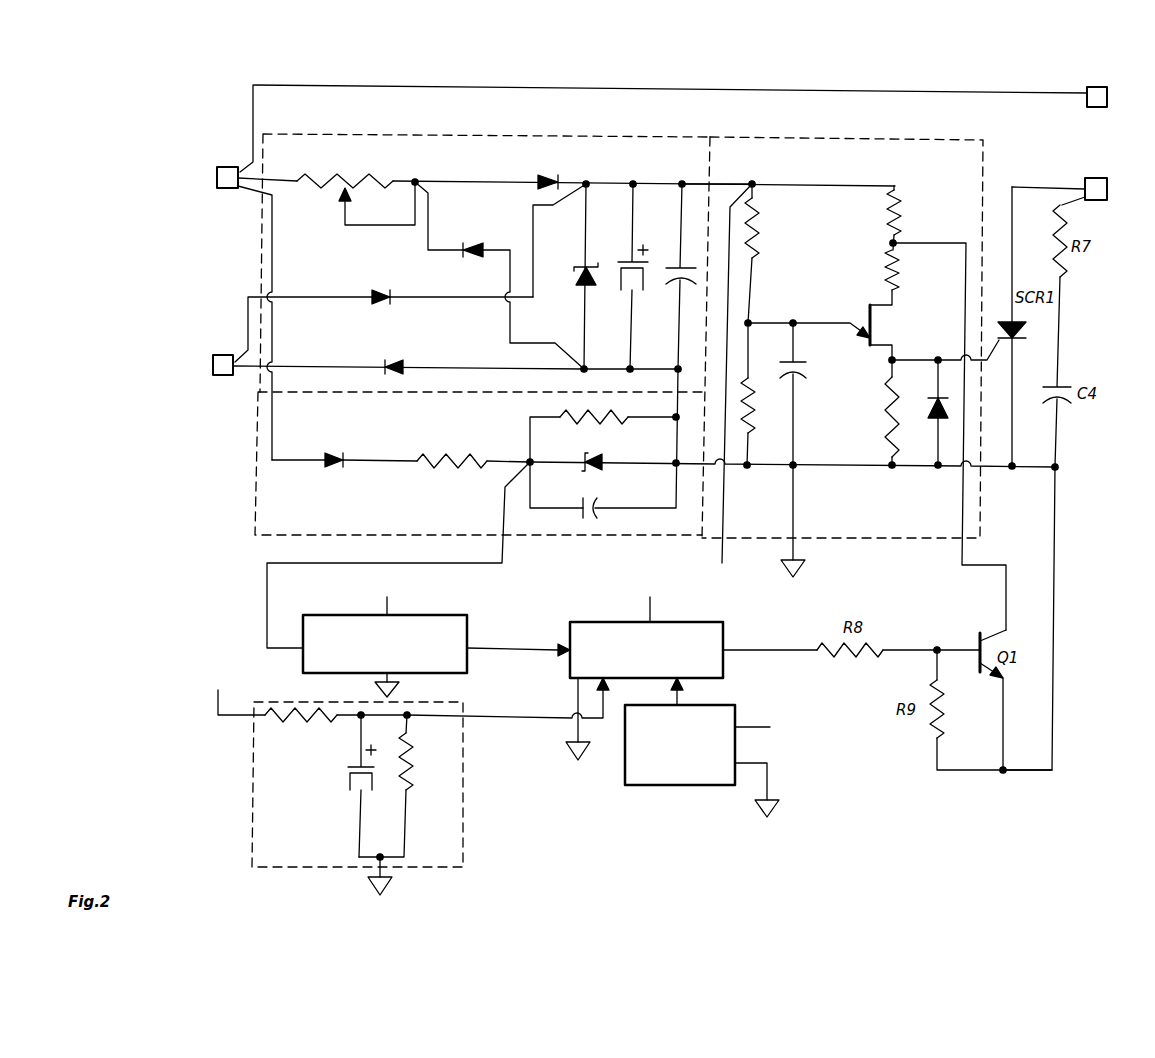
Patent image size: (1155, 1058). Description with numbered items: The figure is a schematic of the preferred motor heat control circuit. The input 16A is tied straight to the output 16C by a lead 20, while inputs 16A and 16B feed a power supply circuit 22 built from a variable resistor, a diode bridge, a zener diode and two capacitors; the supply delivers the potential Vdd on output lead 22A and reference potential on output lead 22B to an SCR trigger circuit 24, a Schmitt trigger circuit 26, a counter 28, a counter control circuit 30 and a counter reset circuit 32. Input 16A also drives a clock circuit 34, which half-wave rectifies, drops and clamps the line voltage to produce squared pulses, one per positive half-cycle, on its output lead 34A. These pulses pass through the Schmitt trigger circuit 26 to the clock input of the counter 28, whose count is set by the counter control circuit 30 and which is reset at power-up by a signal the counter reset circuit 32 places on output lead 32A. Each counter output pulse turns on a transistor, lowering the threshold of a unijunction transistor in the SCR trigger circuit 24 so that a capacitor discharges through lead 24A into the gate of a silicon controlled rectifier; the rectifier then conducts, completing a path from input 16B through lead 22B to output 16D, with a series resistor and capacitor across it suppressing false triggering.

The lead 20 is at (646, 88).
The power supply circuit 22 is at (452, 134).
The output lead 22A is at (688, 182).
The output lead 22B is at (668, 368).
The SCR trigger circuit 24 is at (805, 139).
The lead 24A is at (940, 358).
The Schmitt trigger circuit 26 is at (462, 617).
The counter 28 is at (594, 621).
The counter control circuit 30 is at (737, 712).
The counter reset circuit 32 is at (463, 773).
The output lead 32A is at (497, 716).
The clock circuit 34 is at (258, 497).
The output lead 34A is at (447, 564).
The input 16A is at (228, 167).
The input 16B is at (223, 355).
The output 16C is at (1098, 87).
The output 16D is at (1096, 178).